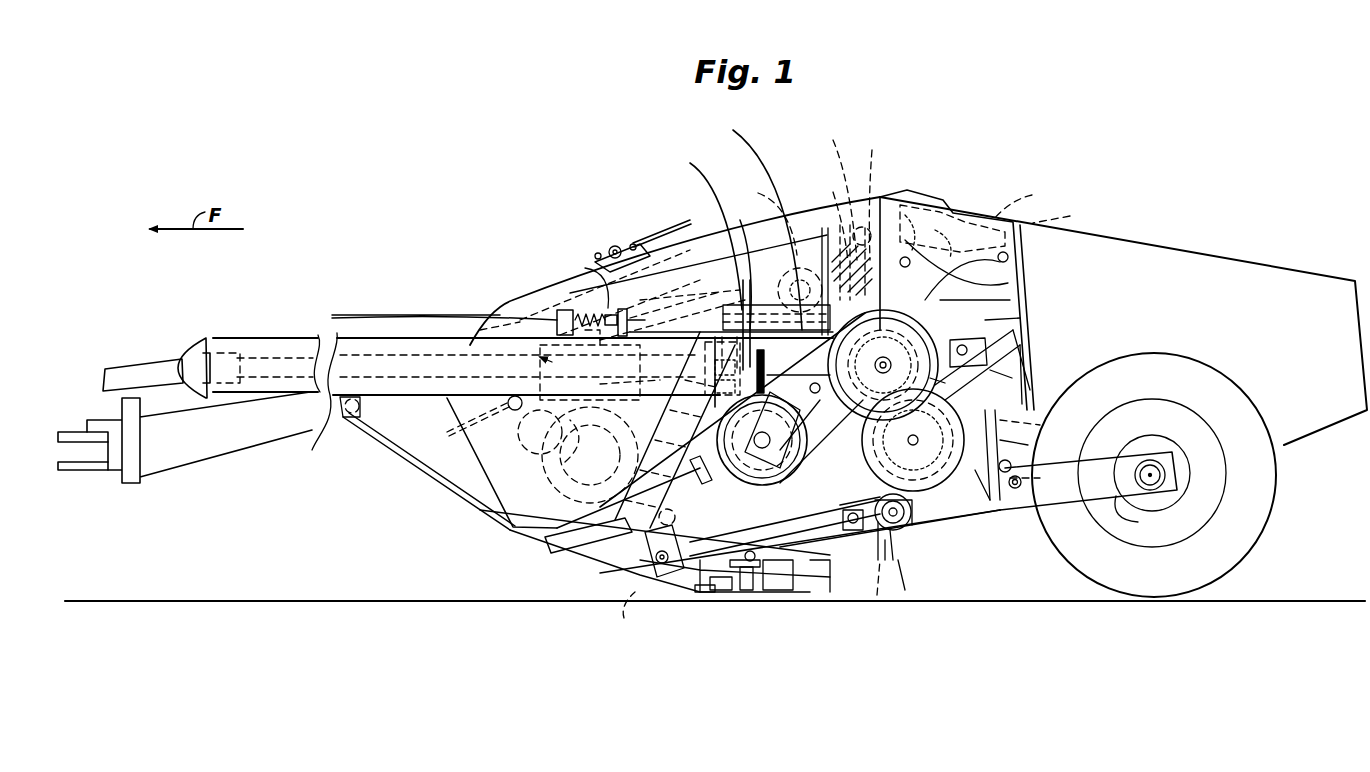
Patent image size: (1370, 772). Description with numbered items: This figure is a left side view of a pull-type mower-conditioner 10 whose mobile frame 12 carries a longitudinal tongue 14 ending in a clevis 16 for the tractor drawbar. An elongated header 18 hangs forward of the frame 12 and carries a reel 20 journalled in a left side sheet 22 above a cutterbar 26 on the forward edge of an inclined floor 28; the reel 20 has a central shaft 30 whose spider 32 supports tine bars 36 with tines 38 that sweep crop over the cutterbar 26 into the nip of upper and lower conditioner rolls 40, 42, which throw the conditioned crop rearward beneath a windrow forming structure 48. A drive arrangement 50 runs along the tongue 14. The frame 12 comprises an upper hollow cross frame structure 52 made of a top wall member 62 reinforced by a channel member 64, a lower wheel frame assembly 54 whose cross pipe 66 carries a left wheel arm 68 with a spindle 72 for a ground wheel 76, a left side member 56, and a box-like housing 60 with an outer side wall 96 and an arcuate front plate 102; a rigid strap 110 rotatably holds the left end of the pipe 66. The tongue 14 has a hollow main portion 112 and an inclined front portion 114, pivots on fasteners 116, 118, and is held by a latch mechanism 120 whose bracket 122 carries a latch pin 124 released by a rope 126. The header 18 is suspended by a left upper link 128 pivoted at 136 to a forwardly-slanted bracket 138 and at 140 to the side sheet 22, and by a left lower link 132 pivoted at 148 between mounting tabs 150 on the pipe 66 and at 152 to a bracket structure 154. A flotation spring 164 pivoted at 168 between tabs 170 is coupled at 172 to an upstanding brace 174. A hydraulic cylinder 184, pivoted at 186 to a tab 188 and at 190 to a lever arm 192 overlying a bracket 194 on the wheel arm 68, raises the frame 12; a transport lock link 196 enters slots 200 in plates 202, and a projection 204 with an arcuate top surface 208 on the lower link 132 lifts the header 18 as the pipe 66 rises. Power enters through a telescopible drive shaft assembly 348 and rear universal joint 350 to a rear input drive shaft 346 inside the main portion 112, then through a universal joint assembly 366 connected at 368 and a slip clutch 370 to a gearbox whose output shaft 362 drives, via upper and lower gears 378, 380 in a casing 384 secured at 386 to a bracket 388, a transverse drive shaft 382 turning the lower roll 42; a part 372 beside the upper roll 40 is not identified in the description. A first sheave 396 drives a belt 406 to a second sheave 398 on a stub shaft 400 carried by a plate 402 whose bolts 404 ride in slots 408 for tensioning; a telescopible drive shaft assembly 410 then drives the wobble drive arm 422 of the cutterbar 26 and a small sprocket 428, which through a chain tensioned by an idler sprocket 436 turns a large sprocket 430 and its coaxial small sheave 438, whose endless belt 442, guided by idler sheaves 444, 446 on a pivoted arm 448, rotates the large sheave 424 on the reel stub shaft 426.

The pull-type crop harvesting machine 10 is at (482, 124).
The mobile frame 12 is at (952, 540).
The tongue 14 is at (295, 336).
The clevis 16 is at (86, 472).
The header 18 is at (506, 297).
The reel 20 is at (610, 246).
The left side sheet 22 is at (452, 494).
The cutterbar 26 is at (722, 592).
The floor 28 is at (735, 592).
The central shaft 30 is at (598, 478).
The spider 32 is at (536, 444).
The tine bars 36 is at (616, 246).
The tines 38 is at (655, 236).
The upper conditioner roll 40 is at (916, 320).
The lower conditioner roll 42 is at (943, 385).
The windrow forming structure 48 is at (1197, 255).
The drive arrangement 50 is at (894, 530).
The upper hollow cross frame structure 52 is at (950, 203).
The lower wheel frame assembly 54 is at (903, 584).
The left side member 56 is at (1009, 283).
The box-like housing 60 is at (666, 431).
The top wall member 62 is at (925, 216).
The channel member 64 is at (956, 231).
The cylindrical cross pipe 66 is at (895, 536).
The left wheel arm 68 is at (1140, 513).
The spindle 72 is at (1153, 480).
The ground wheel 76 is at (1277, 509).
The outer vertical side wall 96 is at (755, 268).
The arcuate shaped front plate 102 is at (598, 345).
The rigid strap 110 is at (896, 516).
The main portion 112 is at (415, 395).
The front portion 114 is at (172, 460).
The fastener 116 is at (737, 293).
The fastener 118 is at (660, 411).
The releasable latch mechanism 120 is at (556, 310).
The upstanding bracket 122 is at (590, 372).
The latch pin 124 is at (576, 283).
The rope 126 is at (392, 316).
The left upper link 128 is at (880, 197).
The left lower link 132 is at (800, 590).
The pivotal connection 136 is at (1008, 258).
The left forwardly-slanted bracket 138 is at (1011, 300).
The pivotal connection 140 is at (716, 228).
The pivotal connection 148 is at (850, 590).
The mounting tabs 150 is at (877, 596).
The pivotal connection 152 is at (620, 578).
The left bracket structure 154 is at (630, 564).
The left flotation spring 164 is at (821, 253).
The pivotal connection 168 is at (888, 194).
The tabs 170 is at (828, 189).
The coupling 172 is at (628, 529).
The upstanding brace 174 is at (530, 541).
The hydraulic cylinder 184 is at (1021, 318).
The pivotal connection 186 is at (1032, 201).
The tab 188 is at (1074, 215).
The pivotal connection 190 is at (1076, 468).
The lever arm 192 is at (993, 490).
The bracket 194 is at (987, 515).
The transport lock link 196 is at (1023, 404).
The slots 200 is at (1031, 390).
The plates 202 is at (1013, 378).
The projection 204 is at (880, 526).
The arcuate top surface 208 is at (890, 542).
The rear input drive shaft 346 is at (302, 397).
The forward input telescopible drive shaft assembly 348 is at (143, 366).
The rear universal joint 350 is at (204, 340).
The transverse output shaft 362 is at (988, 345).
The universal joint assembly 366 is at (714, 388).
The articulate drive connection 368 is at (714, 370).
The slip clutch 370 is at (723, 352).
The sprocket 372 is at (878, 312).
The upper gear 378 is at (1041, 425).
The lower gear 380 is at (1029, 445).
The transverse drive shaft 382 is at (1041, 478).
The casing 384 is at (1021, 495).
The securement 386 is at (888, 522).
The bracket 388 is at (817, 590).
The first sheave 396 is at (1000, 361).
The second sheave 398 is at (705, 600).
The stub shaft 400 is at (632, 496).
The plate 402 is at (851, 431).
The bolts 404 is at (716, 418).
The endless flexible belt 406 is at (767, 219).
The slots 408 is at (722, 440).
The telescopible drive shaft assembly 410 is at (710, 486).
The wobble assembly drive arm 422 is at (735, 592).
The large diameter sheave 424 is at (566, 463).
The stub shaft 426 is at (609, 385).
The small diameter sprocket 428 is at (738, 530).
The large diameter sprocket 430 is at (913, 440).
The idler sprocket 436 is at (821, 459).
The small diameter sheave 438 is at (811, 389).
The endless belt 442 is at (676, 256).
The idler sheave 444 is at (758, 214).
The idler sheave 446 is at (712, 304).
The arm 448 is at (790, 273).